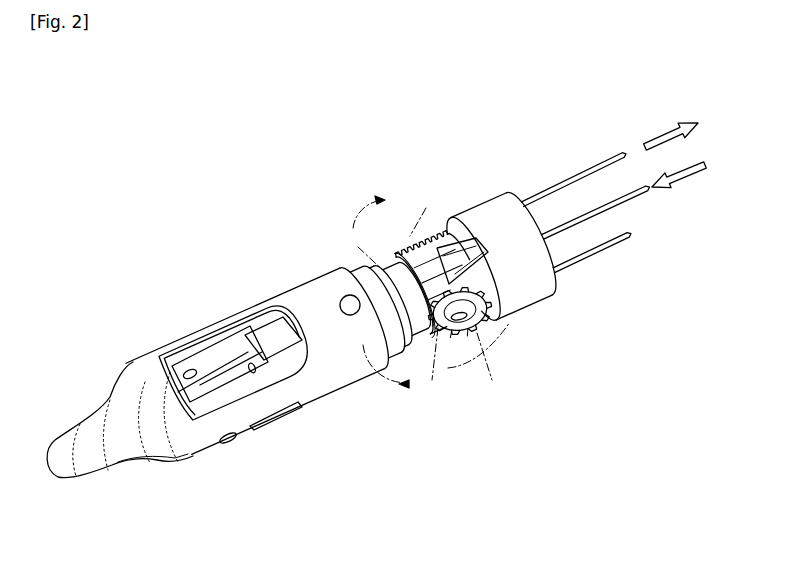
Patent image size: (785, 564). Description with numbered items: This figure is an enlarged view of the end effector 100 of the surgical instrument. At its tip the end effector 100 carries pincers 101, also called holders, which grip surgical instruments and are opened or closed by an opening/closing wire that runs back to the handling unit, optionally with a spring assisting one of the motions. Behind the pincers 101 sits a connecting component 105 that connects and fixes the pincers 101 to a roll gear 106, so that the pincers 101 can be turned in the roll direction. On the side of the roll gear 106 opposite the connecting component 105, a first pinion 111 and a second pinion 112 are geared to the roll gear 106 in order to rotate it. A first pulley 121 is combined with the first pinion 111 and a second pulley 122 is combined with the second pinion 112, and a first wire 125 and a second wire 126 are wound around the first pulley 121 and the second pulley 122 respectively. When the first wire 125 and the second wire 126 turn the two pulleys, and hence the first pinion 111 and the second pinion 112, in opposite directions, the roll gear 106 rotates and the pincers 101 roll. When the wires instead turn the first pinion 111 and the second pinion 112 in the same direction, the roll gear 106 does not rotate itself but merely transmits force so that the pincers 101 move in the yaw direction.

The end effector 100 is at (238, 263).
The pincers 101 is at (207, 445).
The connecting component 105 is at (372, 340).
The roll gear 106 is at (423, 335).
The first pinion 111 is at (485, 313).
The second pinion 112 is at (428, 228).
The first pulley 121 is at (500, 317).
The second pulley 122 is at (455, 213).
The first wire 125 is at (637, 200).
The second wire 126 is at (598, 158).